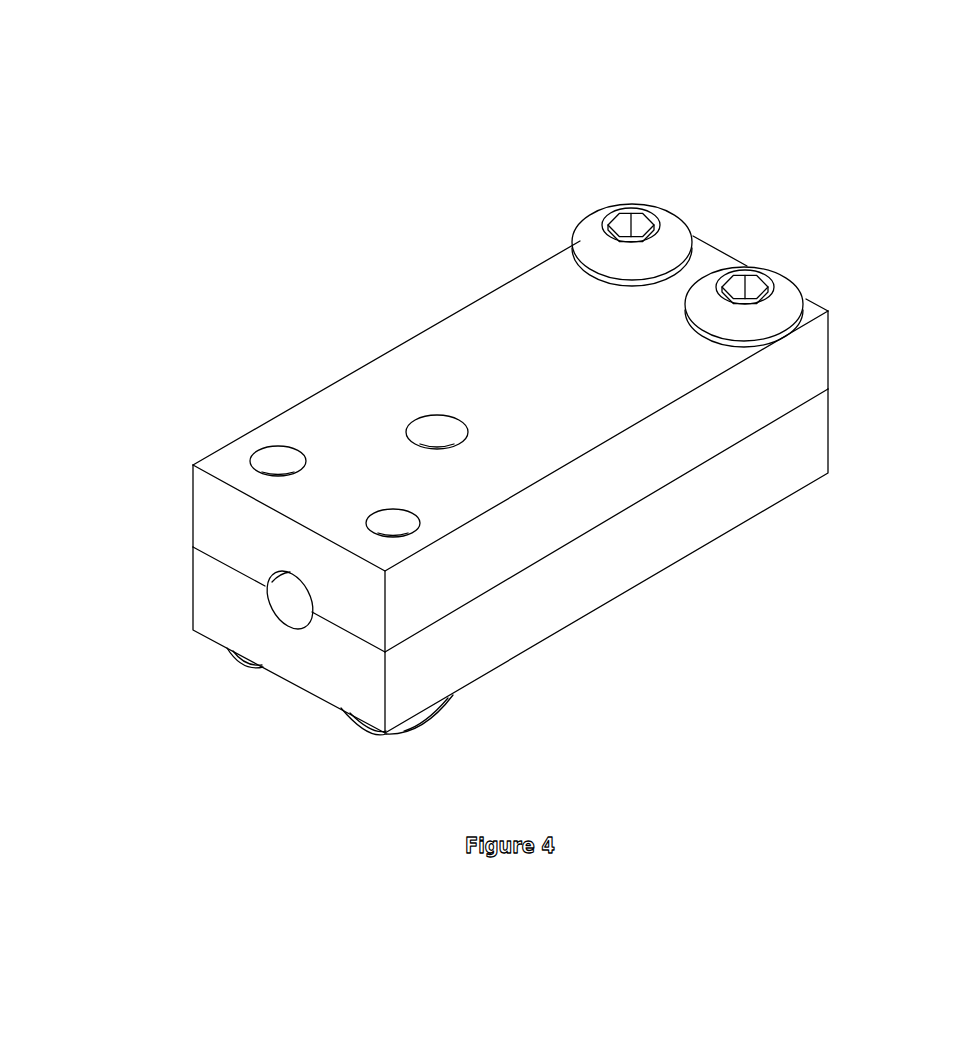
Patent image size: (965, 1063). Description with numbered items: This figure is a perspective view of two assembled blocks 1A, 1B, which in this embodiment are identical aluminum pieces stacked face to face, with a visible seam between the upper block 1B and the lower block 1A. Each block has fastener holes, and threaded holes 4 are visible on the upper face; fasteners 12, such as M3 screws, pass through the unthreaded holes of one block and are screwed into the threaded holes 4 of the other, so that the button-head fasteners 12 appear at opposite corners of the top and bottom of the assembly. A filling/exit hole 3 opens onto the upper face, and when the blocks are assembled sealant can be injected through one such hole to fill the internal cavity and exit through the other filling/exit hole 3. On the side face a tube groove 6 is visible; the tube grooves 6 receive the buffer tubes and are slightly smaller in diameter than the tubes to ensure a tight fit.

The block 1A is at (815, 492).
The block 1B is at (835, 352).
The filling/exit hole 3 is at (427, 438).
The fastener hole 4 is at (283, 463).
The tube groove 6 is at (287, 575).
The fastener 12 is at (675, 243).